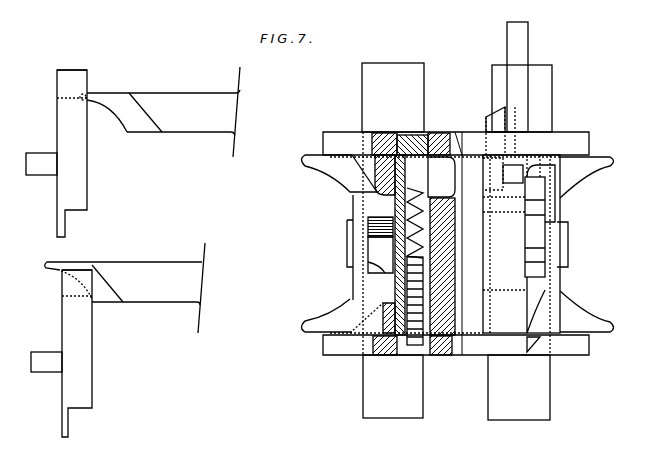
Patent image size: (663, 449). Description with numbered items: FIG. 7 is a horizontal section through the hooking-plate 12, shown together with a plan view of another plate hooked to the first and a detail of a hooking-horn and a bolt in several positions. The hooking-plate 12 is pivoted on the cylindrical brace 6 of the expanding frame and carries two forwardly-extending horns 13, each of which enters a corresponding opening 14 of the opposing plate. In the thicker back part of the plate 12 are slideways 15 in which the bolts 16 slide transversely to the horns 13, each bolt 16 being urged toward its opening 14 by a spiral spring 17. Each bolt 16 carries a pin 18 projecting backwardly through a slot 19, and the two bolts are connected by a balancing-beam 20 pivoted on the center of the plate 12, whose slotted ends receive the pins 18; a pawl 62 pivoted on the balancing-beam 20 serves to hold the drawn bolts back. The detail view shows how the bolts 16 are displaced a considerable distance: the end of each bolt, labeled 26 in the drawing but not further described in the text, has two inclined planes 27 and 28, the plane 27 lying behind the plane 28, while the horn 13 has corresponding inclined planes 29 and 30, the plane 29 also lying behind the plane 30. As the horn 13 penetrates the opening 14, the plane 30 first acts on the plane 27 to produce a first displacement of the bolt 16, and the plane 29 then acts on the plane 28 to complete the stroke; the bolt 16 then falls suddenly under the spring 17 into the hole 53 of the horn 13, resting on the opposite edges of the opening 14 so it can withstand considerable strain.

The cylindrical brace 6 is at (393, 240).
The hooking-plate 12 is at (453, 266).
The horns 13 is at (329, 209).
The openings 14 is at (447, 133).
The slideways 15 is at (434, 325).
The bolts 16 is at (431, 118).
The spiral spring 17 is at (408, 325).
The pin 18 is at (39, 173).
The slot 19 is at (385, 252).
The balancing-beam 20 is at (544, 270).
The end face 26 is at (77, 66).
The inclined plane 27 is at (60, 93).
The inclined plane 28 is at (82, 266).
The inclined plane 29 is at (151, 128).
The inclined plane 30 is at (112, 124).
The holes 53 is at (441, 177).
The pawl 62 is at (507, 40).